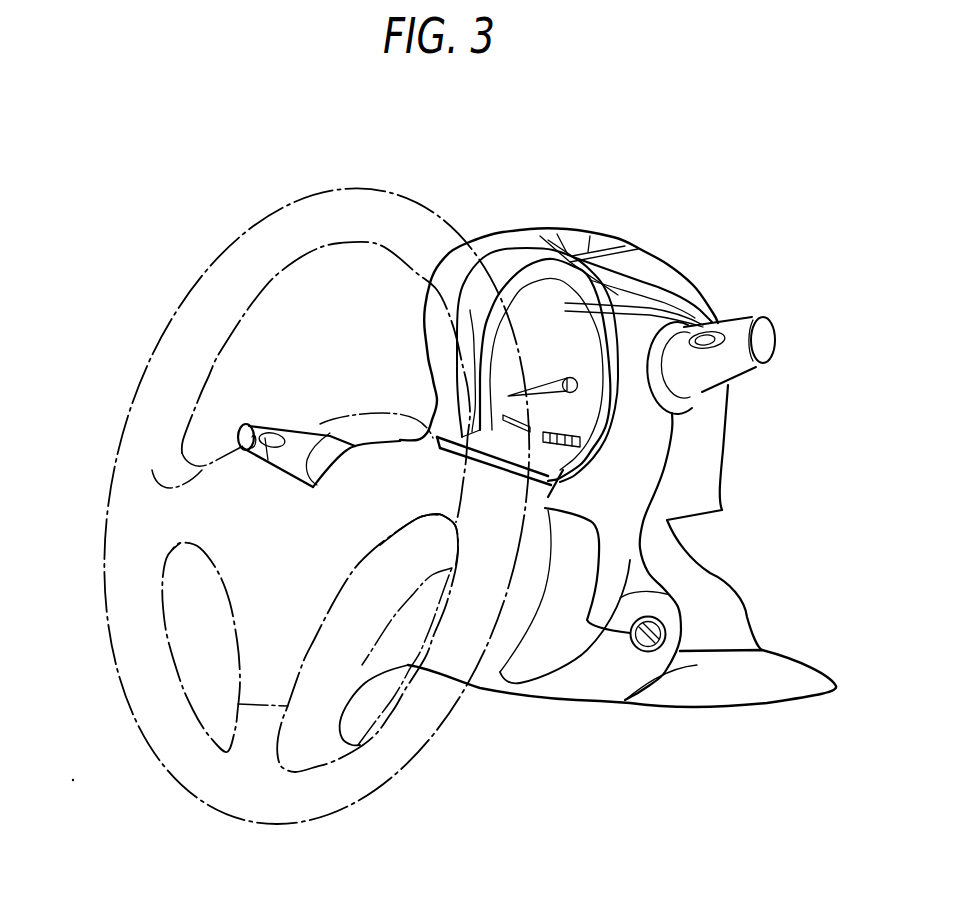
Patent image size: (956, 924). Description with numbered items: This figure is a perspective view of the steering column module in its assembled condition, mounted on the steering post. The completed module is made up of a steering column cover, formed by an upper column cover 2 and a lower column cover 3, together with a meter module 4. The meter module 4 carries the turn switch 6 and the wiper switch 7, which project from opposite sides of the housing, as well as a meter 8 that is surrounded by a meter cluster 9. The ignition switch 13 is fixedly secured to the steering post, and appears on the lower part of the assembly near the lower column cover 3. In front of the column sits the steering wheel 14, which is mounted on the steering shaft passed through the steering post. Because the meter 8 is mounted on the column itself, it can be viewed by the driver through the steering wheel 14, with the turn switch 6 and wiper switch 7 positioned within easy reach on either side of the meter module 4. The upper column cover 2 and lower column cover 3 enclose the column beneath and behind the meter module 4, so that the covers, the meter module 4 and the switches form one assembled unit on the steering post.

The upper column cover 2 is at (710, 320).
The lower column cover 3 is at (710, 707).
The meter module 4 is at (551, 215).
The turn switch 6 is at (316, 428).
The wiper switch 7 is at (712, 380).
The meter 8 is at (565, 330).
The meter cluster 9 is at (597, 232).
The ignition switch 13 is at (630, 647).
The steering wheel 14 is at (127, 418).